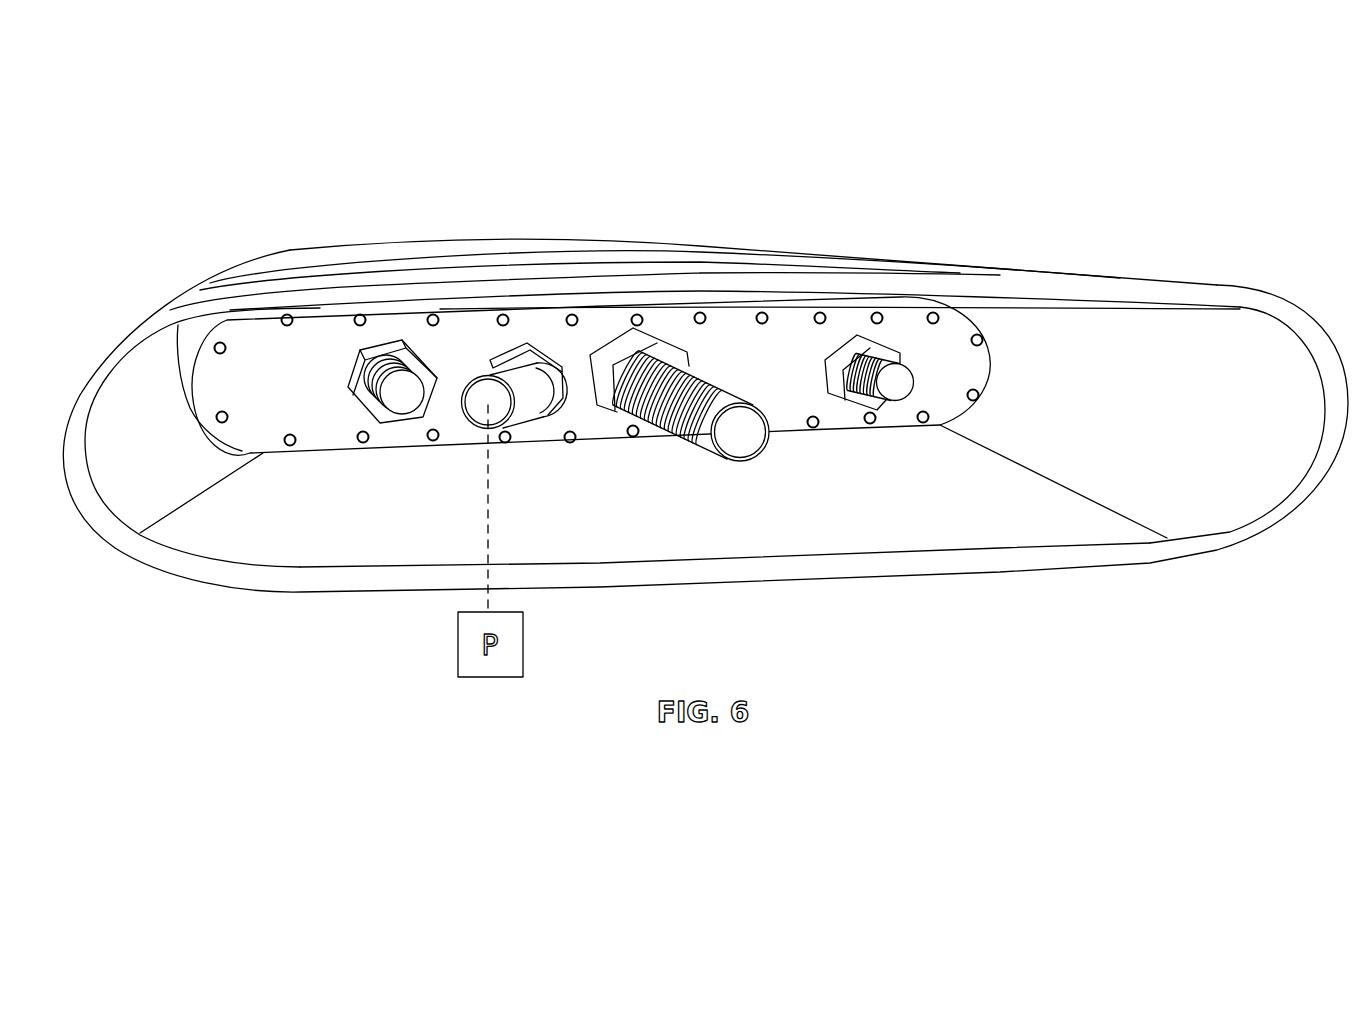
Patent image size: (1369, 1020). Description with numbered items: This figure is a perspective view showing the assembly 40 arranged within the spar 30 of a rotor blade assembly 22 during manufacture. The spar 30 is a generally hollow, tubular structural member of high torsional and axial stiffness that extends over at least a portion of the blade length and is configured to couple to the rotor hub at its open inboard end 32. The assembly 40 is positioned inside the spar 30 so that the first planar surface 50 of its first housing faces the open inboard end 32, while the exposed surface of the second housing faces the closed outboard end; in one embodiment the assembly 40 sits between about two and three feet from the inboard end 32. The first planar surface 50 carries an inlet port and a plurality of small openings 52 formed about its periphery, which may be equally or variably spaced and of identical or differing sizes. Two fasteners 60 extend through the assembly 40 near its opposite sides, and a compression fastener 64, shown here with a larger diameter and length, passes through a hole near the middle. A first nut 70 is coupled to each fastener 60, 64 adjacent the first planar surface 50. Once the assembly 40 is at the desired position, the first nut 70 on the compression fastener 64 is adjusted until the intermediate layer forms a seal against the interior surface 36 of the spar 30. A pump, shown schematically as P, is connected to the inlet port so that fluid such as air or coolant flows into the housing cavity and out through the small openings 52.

The rotor blade assembly 22 is at (1226, 191).
The spar 30 is at (477, 248).
The inboard end 32 is at (1230, 296).
The interior surface 36 is at (920, 537).
The assembly 40 is at (900, 437).
The first planar surface 50 is at (222, 372).
The small openings 52 is at (224, 422).
The fastener 60 is at (400, 400).
The compression fastener 64 is at (747, 443).
The first nut 70 is at (385, 345).